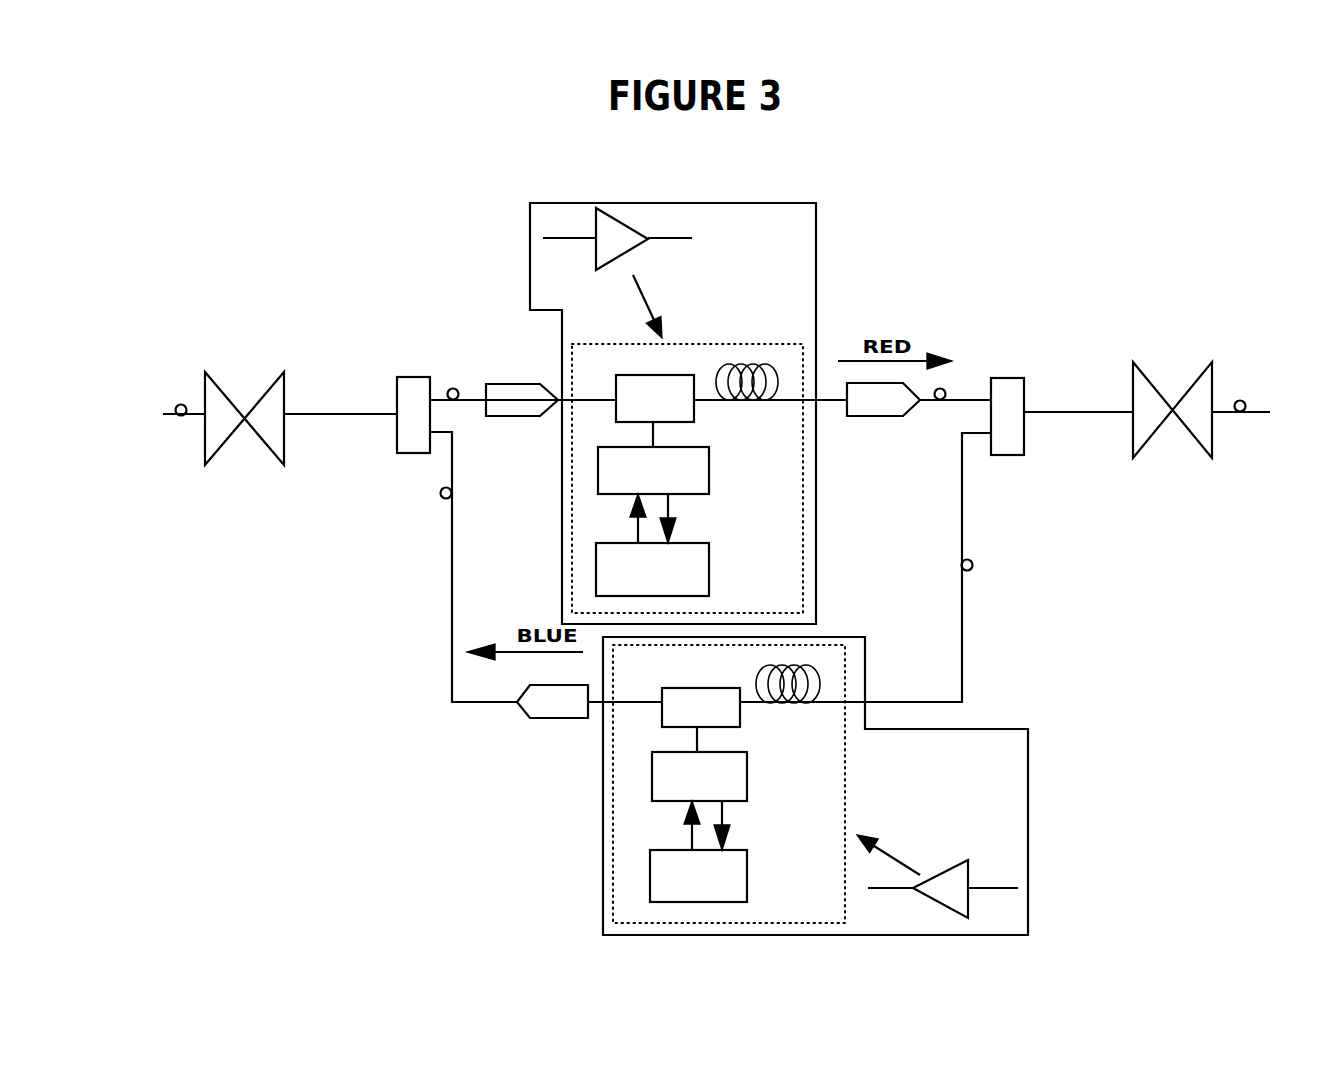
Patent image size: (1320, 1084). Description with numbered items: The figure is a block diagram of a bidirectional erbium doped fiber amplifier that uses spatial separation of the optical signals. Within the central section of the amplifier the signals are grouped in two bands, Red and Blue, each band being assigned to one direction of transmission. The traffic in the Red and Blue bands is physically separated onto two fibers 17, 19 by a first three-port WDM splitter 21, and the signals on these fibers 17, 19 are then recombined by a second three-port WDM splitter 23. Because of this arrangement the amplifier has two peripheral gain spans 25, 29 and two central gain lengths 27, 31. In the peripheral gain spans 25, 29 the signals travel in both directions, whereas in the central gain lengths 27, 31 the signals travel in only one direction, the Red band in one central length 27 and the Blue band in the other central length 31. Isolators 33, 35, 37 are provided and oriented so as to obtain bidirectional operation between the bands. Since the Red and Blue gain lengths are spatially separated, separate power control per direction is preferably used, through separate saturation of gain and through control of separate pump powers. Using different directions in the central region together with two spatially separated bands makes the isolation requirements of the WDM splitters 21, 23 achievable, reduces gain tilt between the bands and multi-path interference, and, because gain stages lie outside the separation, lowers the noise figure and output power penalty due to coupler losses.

The fiber 17 is at (450, 605).
The fiber 19 is at (467, 398).
The first three-port WDM splitter 21 is at (408, 377).
The second three-port WDM splitter 23 is at (1013, 378).
The peripheral gain span 25 is at (213, 378).
The central gain length 27 is at (715, 343).
The peripheral gain span 29 is at (1133, 457).
The central gain length 31 is at (852, 738).
The isolator 33 is at (507, 417).
The isolator 35 is at (875, 417).
The isolator 37 is at (547, 720).